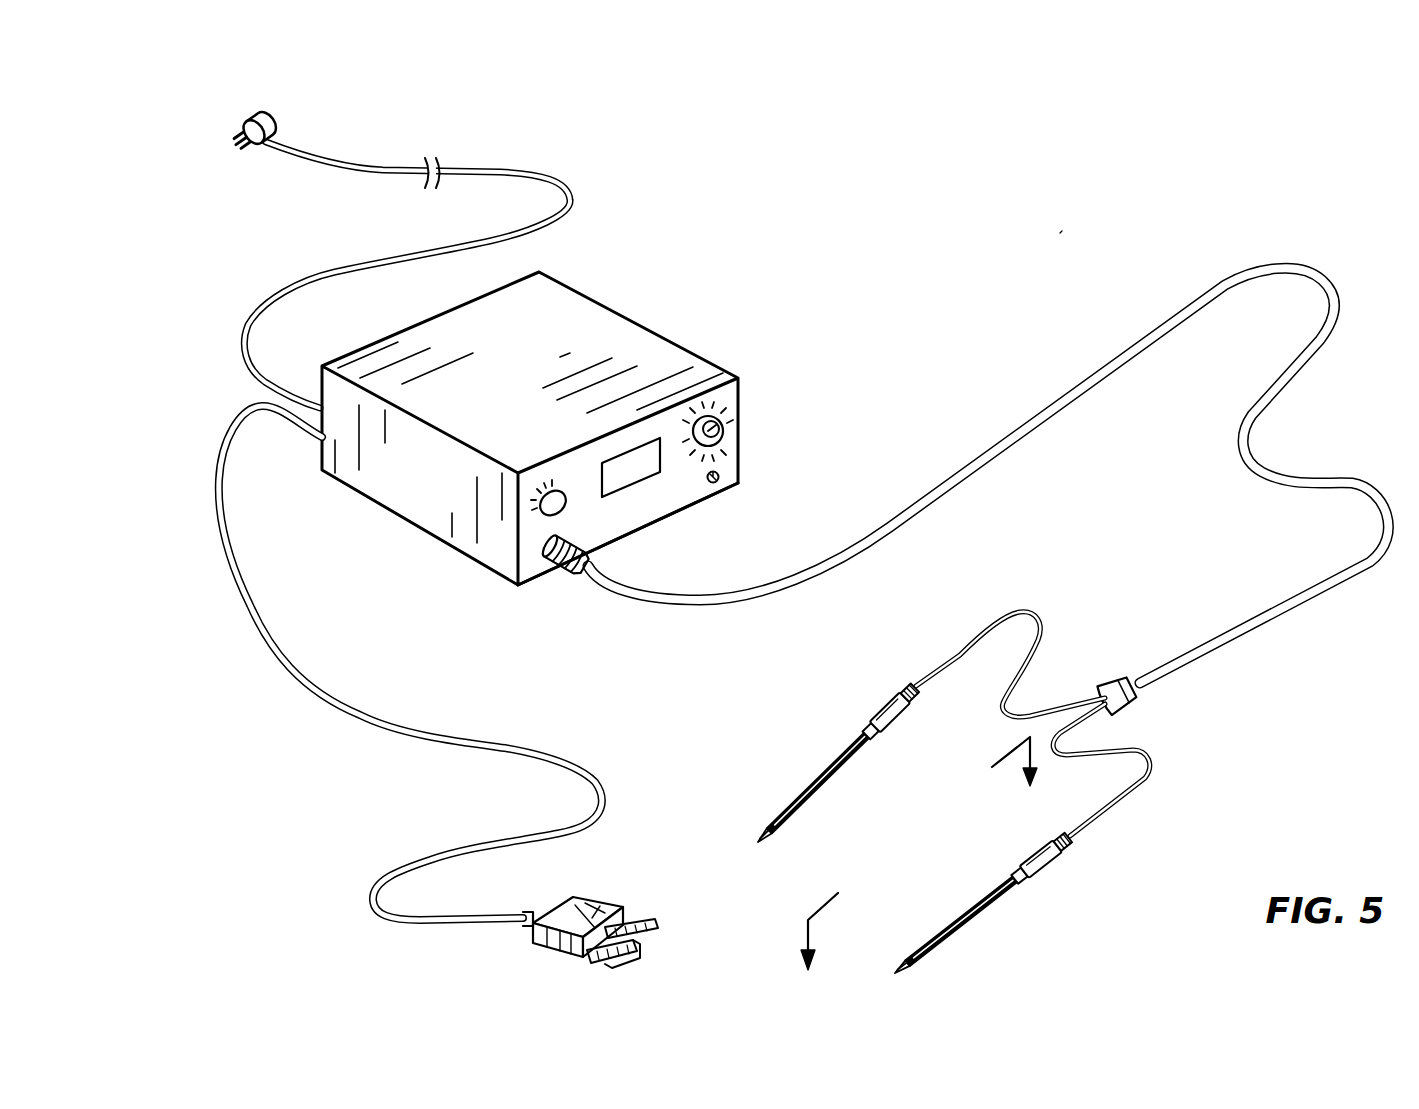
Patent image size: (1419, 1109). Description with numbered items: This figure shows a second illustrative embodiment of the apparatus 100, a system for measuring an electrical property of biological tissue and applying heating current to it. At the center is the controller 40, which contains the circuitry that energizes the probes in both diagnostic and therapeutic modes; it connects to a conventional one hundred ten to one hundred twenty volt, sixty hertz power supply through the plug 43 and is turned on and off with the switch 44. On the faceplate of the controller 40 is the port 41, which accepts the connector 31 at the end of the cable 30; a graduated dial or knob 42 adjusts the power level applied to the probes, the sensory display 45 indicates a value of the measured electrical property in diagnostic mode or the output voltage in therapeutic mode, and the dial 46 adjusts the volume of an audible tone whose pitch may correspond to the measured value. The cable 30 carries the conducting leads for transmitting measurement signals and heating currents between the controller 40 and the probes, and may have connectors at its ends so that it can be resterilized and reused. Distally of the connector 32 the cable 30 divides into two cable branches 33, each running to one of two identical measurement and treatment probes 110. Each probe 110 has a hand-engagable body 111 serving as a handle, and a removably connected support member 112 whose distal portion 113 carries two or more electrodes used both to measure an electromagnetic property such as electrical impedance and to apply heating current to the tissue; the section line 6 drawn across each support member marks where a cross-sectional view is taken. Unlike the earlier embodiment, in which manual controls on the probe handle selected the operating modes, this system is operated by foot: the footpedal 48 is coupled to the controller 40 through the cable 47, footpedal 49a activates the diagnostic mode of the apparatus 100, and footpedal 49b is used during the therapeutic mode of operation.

The apparatus 100 is at (1063, 232).
The controller 40 is at (677, 328).
The port 41 is at (533, 548).
The graduated dial or knob 42 is at (714, 431).
The plug 43 is at (242, 141).
The switch 44 is at (719, 476).
The sensory display 45 is at (660, 438).
The dial 46 is at (540, 493).
The cable 47 is at (415, 725).
The footpedal 48 is at (578, 904).
The footpedal 49a is at (572, 956).
The footpedal 49b is at (643, 921).
The cable 30 is at (1036, 414).
The connector 31 is at (568, 571).
The connector 32 is at (1117, 684).
The cable branches 33 is at (978, 634).
The measurement and treatment probes 110 is at (934, 812).
The hand-engagable body 111 is at (888, 705).
The support member 112 is at (830, 763).
The distal portion 113 is at (783, 816).
The section line 6- 6 is at (919, 857).